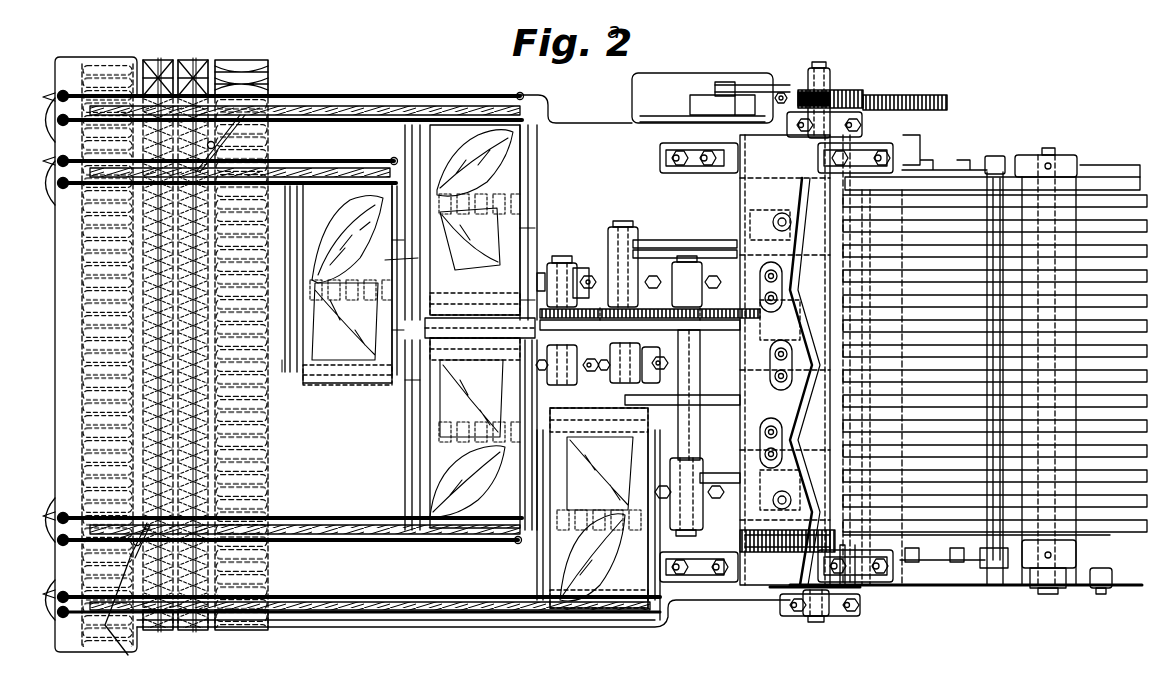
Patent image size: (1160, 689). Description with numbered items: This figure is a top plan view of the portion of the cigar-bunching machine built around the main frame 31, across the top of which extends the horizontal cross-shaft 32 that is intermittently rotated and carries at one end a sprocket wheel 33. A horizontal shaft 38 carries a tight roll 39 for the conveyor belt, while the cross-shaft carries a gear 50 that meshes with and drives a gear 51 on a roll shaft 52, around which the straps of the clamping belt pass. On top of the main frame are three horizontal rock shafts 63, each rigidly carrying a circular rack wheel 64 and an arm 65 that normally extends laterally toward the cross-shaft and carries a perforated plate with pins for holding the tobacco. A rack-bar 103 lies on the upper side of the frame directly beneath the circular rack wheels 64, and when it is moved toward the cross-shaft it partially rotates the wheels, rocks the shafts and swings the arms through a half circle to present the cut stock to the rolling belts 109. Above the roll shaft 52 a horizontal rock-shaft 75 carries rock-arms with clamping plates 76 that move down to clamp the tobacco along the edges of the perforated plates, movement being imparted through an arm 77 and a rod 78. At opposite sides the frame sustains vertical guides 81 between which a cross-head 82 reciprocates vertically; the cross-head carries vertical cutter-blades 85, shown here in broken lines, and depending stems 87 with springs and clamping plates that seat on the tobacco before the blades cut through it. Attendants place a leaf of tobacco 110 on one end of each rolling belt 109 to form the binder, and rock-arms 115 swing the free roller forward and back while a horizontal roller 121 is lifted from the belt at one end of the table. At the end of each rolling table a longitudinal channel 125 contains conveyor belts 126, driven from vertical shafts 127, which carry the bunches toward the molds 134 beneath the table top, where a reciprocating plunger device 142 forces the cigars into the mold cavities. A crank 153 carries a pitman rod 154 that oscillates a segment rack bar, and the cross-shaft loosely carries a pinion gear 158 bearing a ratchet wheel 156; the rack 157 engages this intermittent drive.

The main frame 31 is at (462, 95).
The cross-shaft 32 is at (818, 62).
The sprocket wheel 33 is at (790, 596).
The horizontal shaft 38 is at (1040, 594).
The tight roll 39 is at (1048, 560).
The gear 50 is at (800, 538).
The gear 51 is at (896, 575).
The roll shaft 52 is at (860, 492).
The horizontal rock shaft 63 is at (560, 256).
The circular rack wheel 64 is at (710, 348).
The arm 65 is at (708, 474).
The horizontal rock-shaft 75 is at (848, 392).
The clamping plate 76 is at (848, 306).
The arm 77 is at (880, 530).
The rod 78 is at (942, 565).
The vertical guides 81 is at (708, 172).
The cross-head 82 is at (725, 595).
The cutter-blades 85 is at (808, 228).
The depending stems 87 is at (772, 221).
The rack-bar 103 is at (480, 325).
The rolling belt 109 is at (505, 225).
The leaf of tobacco 110 is at (462, 160).
The rock-arms 115 is at (395, 262).
The horizontal roller 121 is at (325, 380).
The longitudinal channel 125 is at (300, 108).
The conveyor belts 126 is at (310, 116).
The vertical shafts 127 is at (64, 190).
The molds 134 is at (270, 76).
The reciprocating plunger device 142 is at (148, 628).
The crank 153 is at (690, 102).
The pitman rod 154 is at (745, 84).
The ratchet wheel 156 is at (832, 90).
The rack 157 is at (930, 88).
The pinion gear 158 is at (760, 101).